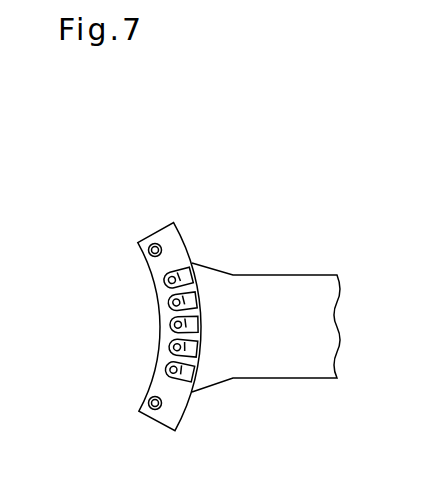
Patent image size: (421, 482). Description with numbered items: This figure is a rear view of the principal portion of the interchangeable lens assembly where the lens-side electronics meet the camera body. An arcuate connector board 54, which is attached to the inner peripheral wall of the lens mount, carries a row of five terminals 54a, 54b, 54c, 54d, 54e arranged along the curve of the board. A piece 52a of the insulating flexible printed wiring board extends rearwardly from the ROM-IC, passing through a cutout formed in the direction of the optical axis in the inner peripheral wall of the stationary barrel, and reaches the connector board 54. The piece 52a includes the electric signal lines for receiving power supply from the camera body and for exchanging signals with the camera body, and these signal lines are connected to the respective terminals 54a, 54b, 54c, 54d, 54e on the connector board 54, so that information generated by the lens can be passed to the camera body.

The piece of flexible printed wiring board 52a is at (290, 288).
The connector board 54 is at (141, 296).
The terminal 54a is at (147, 265).
The terminal 54b is at (176, 277).
The terminal 54c is at (176, 323).
The terminal 54d is at (176, 343).
The terminal 54e is at (185, 373).